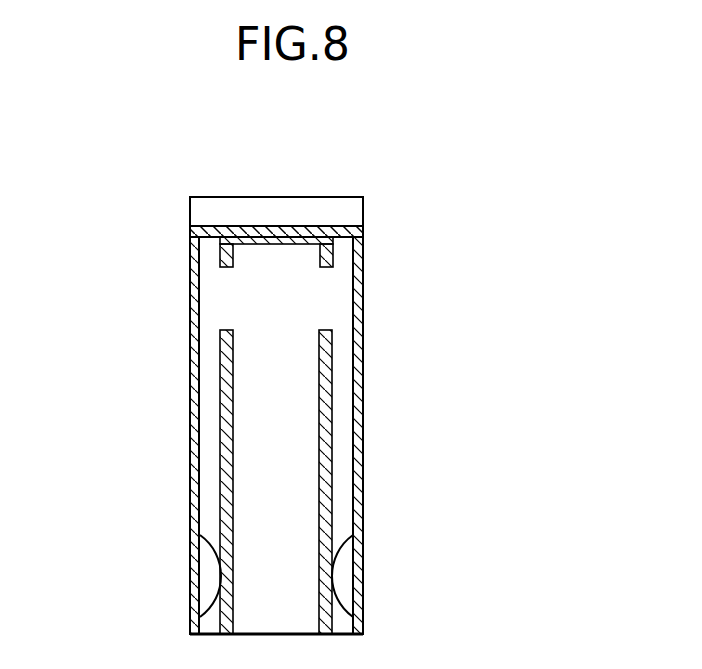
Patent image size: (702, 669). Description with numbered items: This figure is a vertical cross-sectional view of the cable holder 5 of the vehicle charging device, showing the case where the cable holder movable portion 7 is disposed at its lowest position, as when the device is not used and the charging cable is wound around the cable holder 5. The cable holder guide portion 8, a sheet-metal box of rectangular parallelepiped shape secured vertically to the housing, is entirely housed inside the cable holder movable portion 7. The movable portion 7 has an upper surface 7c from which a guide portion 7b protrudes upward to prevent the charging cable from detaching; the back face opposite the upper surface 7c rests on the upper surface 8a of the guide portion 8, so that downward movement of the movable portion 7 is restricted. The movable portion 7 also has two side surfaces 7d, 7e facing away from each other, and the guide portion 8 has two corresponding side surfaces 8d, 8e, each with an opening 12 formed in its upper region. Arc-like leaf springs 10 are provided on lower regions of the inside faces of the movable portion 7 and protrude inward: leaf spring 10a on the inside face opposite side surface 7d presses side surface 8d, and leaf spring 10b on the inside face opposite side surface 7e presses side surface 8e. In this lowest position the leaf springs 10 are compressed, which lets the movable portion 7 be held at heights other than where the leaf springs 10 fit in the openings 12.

The cable holder 5 is at (503, 453).
The cable holder movable portion 7 is at (378, 500).
The guide portion 7b is at (227, 197).
The upper surface 7c is at (257, 226).
The side surface 7d is at (362, 616).
The side surface 7e is at (196, 624).
The cable holder guide portion 8 is at (345, 466).
The upper surface 8a is at (313, 240).
The side surface 8d is at (332, 252).
The side surface 8e is at (222, 250).
The leaf springs 10 is at (285, 574).
The leaf spring 10a is at (335, 586).
The leaf spring 10b is at (218, 583).
The openings 12 is at (224, 322).